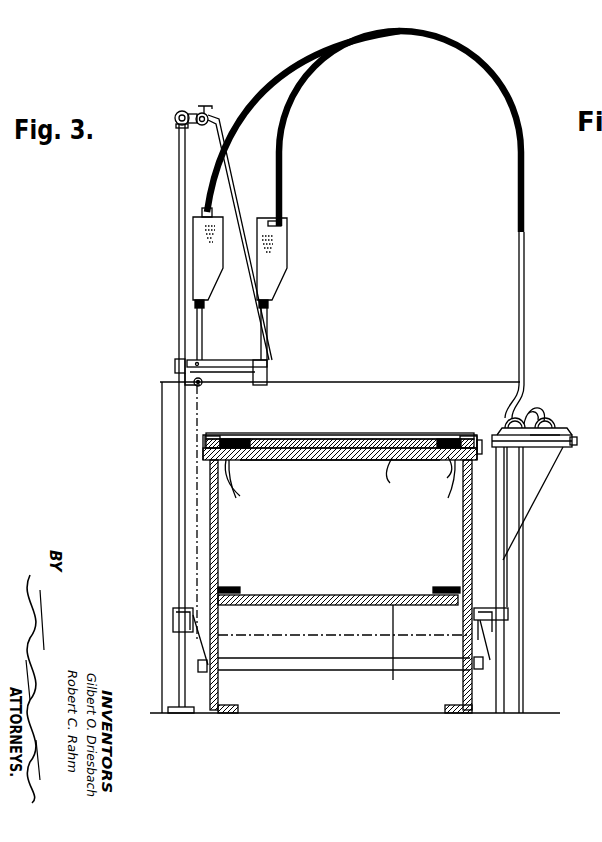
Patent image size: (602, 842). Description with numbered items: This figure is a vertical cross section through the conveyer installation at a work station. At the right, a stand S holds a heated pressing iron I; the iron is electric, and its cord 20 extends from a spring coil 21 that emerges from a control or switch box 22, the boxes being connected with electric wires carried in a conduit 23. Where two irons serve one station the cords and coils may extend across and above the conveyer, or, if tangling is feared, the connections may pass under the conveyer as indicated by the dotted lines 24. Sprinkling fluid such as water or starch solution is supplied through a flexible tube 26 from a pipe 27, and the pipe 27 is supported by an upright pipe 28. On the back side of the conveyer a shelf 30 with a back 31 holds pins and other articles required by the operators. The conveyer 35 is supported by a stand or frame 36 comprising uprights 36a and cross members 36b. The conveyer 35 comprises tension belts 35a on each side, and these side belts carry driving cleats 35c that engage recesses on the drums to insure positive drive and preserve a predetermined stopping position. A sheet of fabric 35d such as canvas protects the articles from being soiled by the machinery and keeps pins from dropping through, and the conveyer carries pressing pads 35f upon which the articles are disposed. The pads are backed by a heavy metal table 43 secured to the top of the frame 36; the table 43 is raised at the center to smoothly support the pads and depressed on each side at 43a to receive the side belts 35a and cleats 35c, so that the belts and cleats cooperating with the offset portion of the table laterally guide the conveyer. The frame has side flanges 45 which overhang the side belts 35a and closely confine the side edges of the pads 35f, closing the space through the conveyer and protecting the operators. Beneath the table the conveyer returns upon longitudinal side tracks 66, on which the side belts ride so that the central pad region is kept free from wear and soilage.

The cord 20 is at (543, 405).
The spring coil 21 is at (264, 84).
The control or switch box 22 is at (205, 258).
The conduit 23 is at (196, 385).
The dotted-line connections 24 is at (197, 538).
The flexible tube 26 is at (213, 154).
The pipe 27 is at (176, 113).
The upright pipe 28 is at (178, 192).
The shelf 30 is at (238, 335).
The back 31 is at (185, 347).
The conveyer 35 is at (312, 452).
The tension belt 35a is at (238, 440).
The driving cleat 35c is at (445, 462).
The sheet of fabric 35d is at (405, 420).
The pressing pad 35f is at (322, 436).
The stand or frame 36 is at (340, 574).
The upright 36a is at (218, 540).
The cross member 36b is at (352, 667).
The table 43 is at (302, 455).
The depressed side portion 43a is at (229, 458).
The side flange 45 is at (220, 436).
The side track 66 is at (221, 604).
The pressing iron I is at (566, 430).
The stand S is at (572, 440).